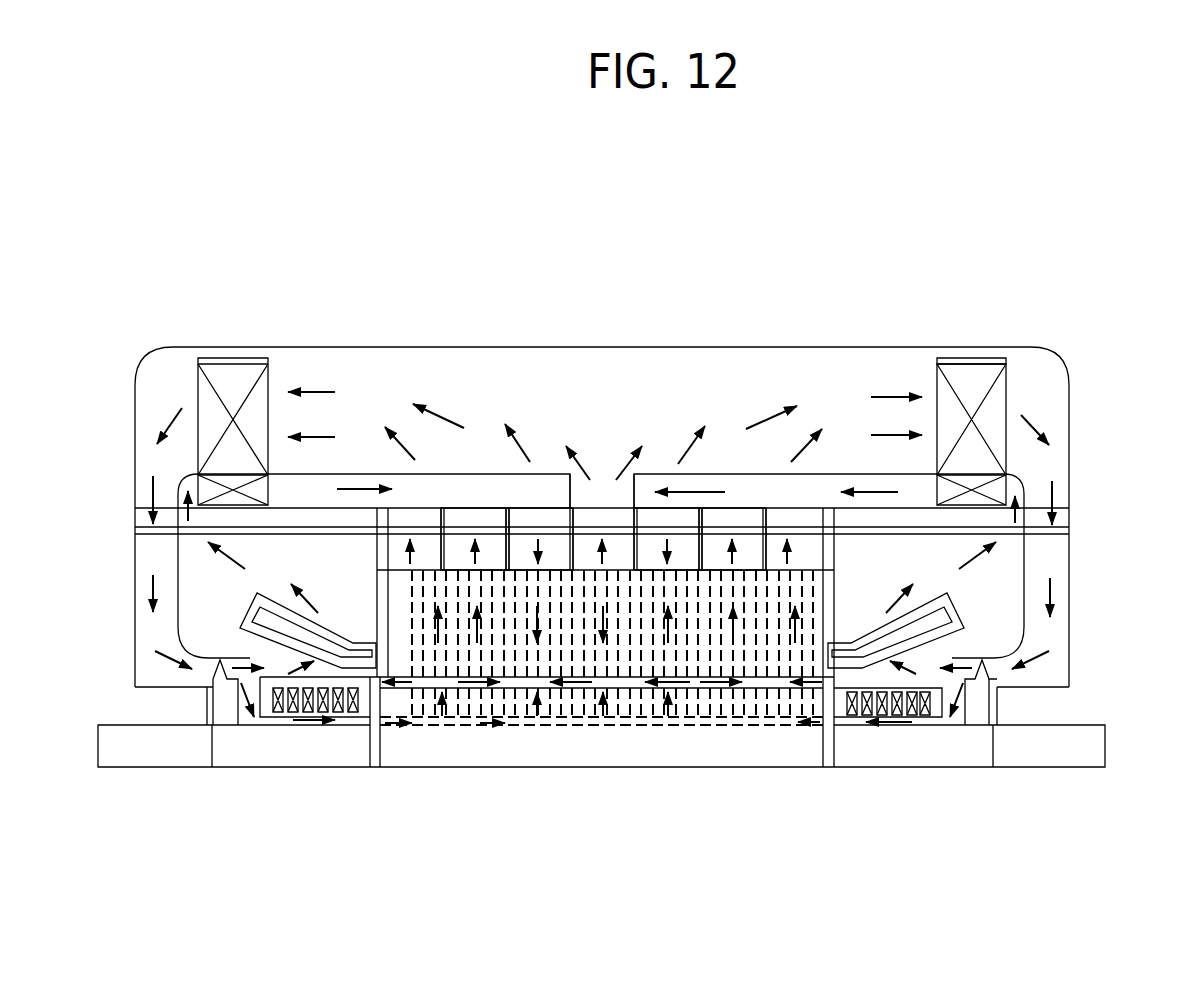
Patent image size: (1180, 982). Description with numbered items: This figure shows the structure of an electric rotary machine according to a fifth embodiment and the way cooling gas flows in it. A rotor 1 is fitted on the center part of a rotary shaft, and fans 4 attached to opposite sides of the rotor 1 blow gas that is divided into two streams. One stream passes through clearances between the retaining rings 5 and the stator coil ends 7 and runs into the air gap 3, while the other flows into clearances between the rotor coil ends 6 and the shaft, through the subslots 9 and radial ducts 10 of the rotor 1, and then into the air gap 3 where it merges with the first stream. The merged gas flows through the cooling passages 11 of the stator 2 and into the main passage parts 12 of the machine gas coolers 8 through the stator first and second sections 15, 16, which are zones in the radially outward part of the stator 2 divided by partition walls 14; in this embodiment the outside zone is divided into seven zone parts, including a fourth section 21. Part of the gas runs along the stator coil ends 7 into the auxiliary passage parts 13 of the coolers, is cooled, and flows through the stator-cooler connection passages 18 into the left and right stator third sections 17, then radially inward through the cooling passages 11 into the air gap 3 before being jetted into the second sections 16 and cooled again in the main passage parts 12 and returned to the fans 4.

The rotor 1 is at (787, 748).
The stator 2 is at (398, 585).
The air gap 3 is at (522, 683).
The fans 4 is at (987, 685).
The retaining rings 5 is at (337, 684).
The rotor coil ends 6 is at (925, 717).
The stator coil ends 7 is at (253, 600).
The machine gas coolers 8 is at (957, 362).
The subslots 9 is at (543, 723).
The radial ducts 10 is at (625, 712).
The cooling passage 11 is at (783, 590).
The main passage parts 12 is at (997, 402).
The auxiliary passage parts 13 is at (1000, 492).
The partition walls 14 is at (698, 512).
The stator first sections 15 is at (443, 513).
The stator second sections 16 is at (493, 515).
The stator third sections 17 is at (530, 515).
The stator-cooler connection passages 18 is at (310, 488).
The fourth section 21 is at (590, 510).